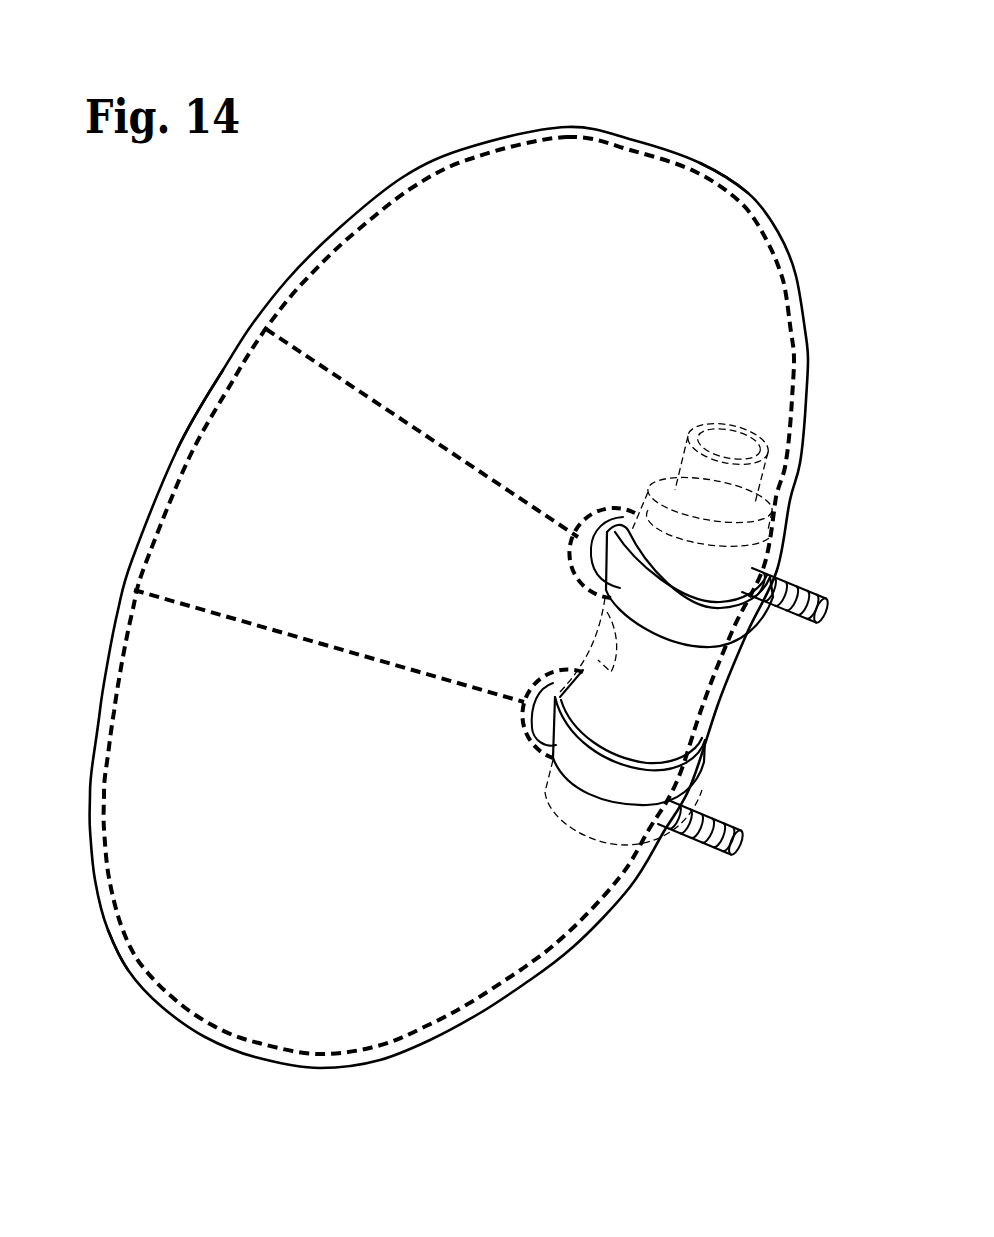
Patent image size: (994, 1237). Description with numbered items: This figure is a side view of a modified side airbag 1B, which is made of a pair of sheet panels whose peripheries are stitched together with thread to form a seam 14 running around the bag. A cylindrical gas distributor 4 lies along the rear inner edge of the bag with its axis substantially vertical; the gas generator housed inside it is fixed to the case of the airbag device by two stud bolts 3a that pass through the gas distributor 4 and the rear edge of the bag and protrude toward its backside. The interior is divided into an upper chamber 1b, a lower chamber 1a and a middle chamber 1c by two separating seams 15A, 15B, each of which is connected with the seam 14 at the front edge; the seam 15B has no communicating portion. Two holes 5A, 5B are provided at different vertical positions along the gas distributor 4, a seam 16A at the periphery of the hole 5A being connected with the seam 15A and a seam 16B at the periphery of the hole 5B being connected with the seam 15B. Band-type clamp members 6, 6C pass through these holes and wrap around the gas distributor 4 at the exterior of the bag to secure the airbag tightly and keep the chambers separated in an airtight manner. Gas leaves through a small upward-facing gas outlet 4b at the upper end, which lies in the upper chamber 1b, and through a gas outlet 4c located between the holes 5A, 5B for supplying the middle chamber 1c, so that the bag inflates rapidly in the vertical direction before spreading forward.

The side airbag 1B is at (185, 280).
The lower chamber 1a is at (177, 843).
The upper chamber 1b is at (710, 218).
The middle chamber 1c is at (245, 463).
The seam 14 is at (100, 790).
The seam 15A is at (292, 634).
The seam 15B is at (418, 430).
The seam 16A is at (527, 743).
The seam 16B is at (576, 557).
The hole 5A is at (540, 718).
The hole 5B is at (608, 535).
The gas distributor 4 is at (655, 490).
The gas outlet 4b is at (730, 427).
The gas outlet 4c is at (617, 668).
The clamp member 6 is at (662, 618).
The clamp member 6C is at (595, 777).
The stud bolt 3a is at (790, 590).